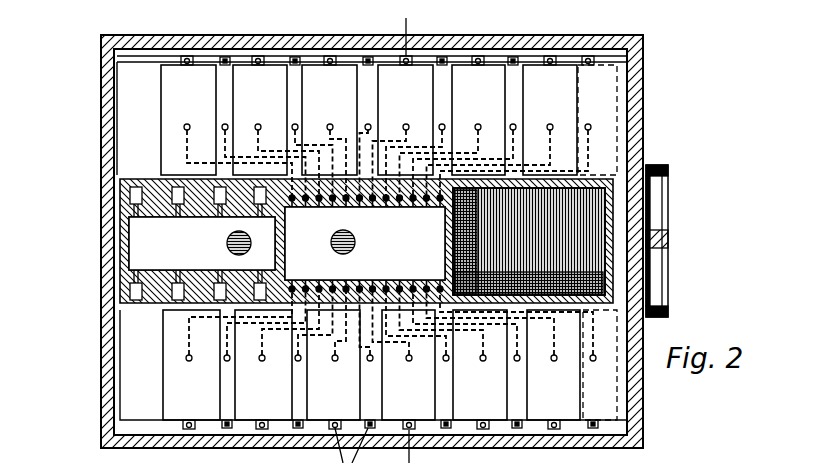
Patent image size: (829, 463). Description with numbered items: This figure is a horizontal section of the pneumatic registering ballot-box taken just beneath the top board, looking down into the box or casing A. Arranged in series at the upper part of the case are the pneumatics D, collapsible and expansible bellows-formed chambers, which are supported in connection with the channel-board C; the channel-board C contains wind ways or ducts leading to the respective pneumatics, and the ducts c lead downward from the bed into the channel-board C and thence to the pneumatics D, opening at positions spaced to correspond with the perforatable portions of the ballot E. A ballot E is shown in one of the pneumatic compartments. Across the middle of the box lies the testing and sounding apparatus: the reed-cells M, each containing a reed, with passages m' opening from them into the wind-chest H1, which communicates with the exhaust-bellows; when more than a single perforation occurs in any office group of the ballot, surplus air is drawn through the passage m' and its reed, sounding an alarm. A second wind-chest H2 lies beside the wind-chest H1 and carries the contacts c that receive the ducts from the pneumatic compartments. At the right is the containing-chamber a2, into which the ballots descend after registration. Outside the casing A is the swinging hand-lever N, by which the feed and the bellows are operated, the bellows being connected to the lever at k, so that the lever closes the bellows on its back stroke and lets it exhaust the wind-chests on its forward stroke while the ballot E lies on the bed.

The box or casing A is at (304, 42).
The channel-board C is at (372, 238).
The pneumatics D is at (379, 242).
The ballot E is at (550, 120).
The lead wire W is at (405, 28).
The reed-cells M is at (120, 189).
The wind-chest H1 is at (202, 243).
The passage m' is at (198, 243).
The switch plate H2 is at (365, 243).
The ducts c is at (410, 209).
The containing-chamber a2 is at (529, 241).
The hand-lever N is at (670, 241).
The bellows connection k is at (668, 170).